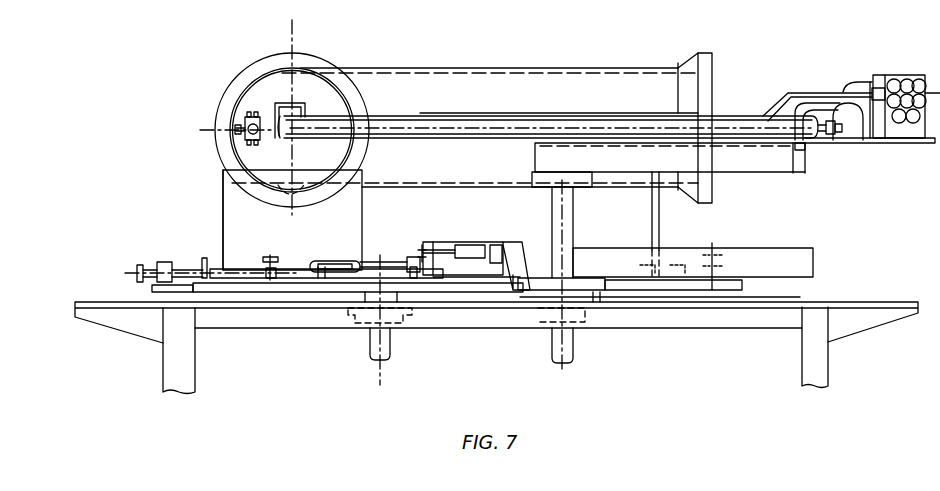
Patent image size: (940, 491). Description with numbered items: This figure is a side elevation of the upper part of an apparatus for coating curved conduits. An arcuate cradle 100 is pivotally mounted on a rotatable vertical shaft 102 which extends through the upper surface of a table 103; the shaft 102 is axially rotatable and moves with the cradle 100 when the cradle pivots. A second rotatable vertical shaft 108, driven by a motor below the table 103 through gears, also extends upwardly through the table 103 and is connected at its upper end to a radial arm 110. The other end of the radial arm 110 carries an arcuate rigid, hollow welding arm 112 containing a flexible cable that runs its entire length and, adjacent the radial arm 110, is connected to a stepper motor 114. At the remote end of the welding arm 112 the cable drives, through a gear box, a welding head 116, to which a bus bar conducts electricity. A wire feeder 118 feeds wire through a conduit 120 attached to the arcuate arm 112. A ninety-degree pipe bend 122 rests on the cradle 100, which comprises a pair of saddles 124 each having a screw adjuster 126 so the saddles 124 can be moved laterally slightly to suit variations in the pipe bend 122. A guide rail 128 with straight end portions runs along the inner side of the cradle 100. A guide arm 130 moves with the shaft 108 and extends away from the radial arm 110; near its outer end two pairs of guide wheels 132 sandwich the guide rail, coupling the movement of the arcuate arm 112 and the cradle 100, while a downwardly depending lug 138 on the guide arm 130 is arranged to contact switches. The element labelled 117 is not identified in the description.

The arcuate cradle 100 is at (230, 288).
The rotatable vertical shaft 102 is at (385, 350).
The table 103 is at (142, 307).
The second rotatable vertical shaft 108 is at (565, 217).
The radial arm 110 is at (770, 160).
The arcuate welding arm 112 is at (824, 133).
The stepper motor 114 is at (857, 130).
The welding head 116 is at (283, 103).
The rod 117 is at (727, 124).
The wire feeder 118 is at (901, 80).
The conduit 120 is at (789, 91).
The pipe bend 122 is at (428, 78).
The saddles 124 is at (235, 233).
The screw adjuster 126 is at (135, 272).
The guide rail 128 is at (805, 261).
The guide arm 130 is at (442, 240).
The guide wheels 132 is at (422, 255).
The downwardly depending lug 138 is at (495, 245).